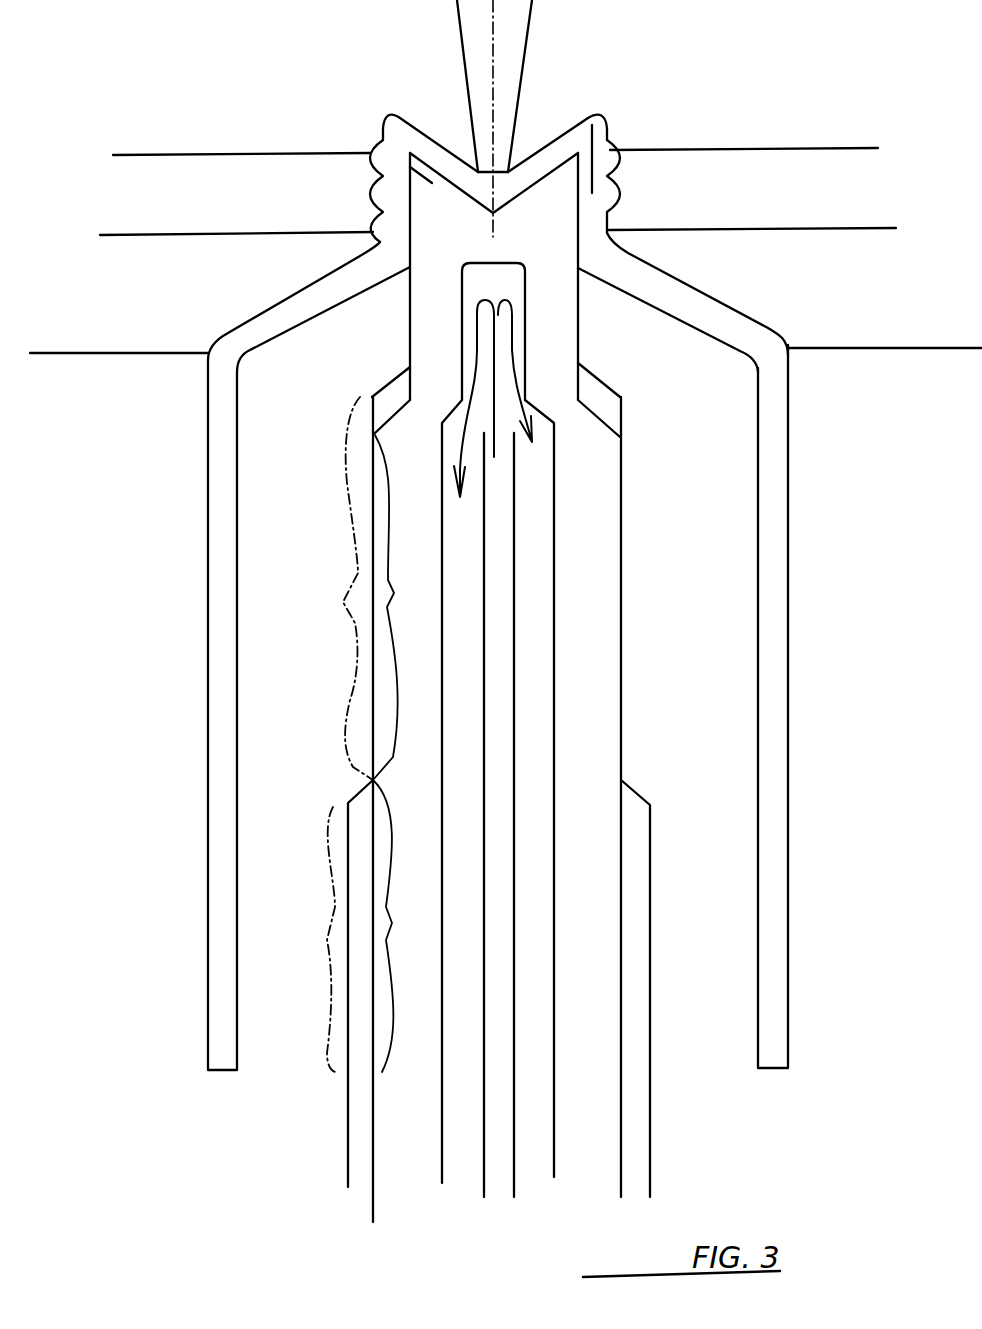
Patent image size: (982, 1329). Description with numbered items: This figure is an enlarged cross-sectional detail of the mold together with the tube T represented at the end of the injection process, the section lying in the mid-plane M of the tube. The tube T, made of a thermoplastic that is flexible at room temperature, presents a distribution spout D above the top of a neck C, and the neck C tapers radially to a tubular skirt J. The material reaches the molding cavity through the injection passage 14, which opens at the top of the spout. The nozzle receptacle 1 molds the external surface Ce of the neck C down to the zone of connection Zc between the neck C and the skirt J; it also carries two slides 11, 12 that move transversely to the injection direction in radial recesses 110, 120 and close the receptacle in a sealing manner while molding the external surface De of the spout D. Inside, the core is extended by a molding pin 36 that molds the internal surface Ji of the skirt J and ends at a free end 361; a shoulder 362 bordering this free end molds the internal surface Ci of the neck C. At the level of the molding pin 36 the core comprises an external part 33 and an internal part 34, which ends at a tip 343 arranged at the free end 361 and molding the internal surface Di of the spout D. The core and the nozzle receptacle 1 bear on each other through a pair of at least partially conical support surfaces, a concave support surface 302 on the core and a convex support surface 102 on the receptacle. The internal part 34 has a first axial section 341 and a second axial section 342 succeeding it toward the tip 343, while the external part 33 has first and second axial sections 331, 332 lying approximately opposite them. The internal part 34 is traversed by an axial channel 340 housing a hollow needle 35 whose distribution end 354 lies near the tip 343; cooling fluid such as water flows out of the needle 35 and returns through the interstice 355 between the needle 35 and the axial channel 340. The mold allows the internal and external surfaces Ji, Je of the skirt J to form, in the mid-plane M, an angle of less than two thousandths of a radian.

The injection passage 14 is at (487, 140).
The convex support surface of the nozzle receptacle 102 is at (565, 134).
The free end of the molding pin 361 is at (383, 128).
The tip of the internal part 343 is at (501, 181).
The distribution spout D is at (605, 131).
The external surface of the spout De is at (615, 188).
The internal surface of the spout Di is at (578, 212).
The concave support surface of the core 302 is at (517, 197).
The radial recess of the nozzle receptacle 110 is at (290, 155).
The radial recess of the nozzle receptacle 120 is at (723, 148).
The slide 11 is at (236, 194).
The slide 12 is at (752, 189).
The nozzle receptacle 1 is at (506, 190).
The neck C is at (267, 318).
The external surface of the neck Ce is at (293, 294).
The internal surface of the neck Ci is at (292, 328).
The shoulder 362 is at (365, 276).
The zone of connection Zc is at (205, 352).
The tubular skirt J is at (225, 683).
The external surface of the skirt Je is at (208, 602).
The internal surface of the skirt Ji is at (237, 590).
The tube T is at (175, 422).
The internal part of the core 34 is at (600, 730).
The external part of the core 33 is at (645, 786).
The molding pin 36 is at (708, 711).
The interstice 355 is at (533, 570).
The hollow needle 35 is at (513, 615).
The distribution end of the needle 354 is at (513, 440).
The second axial section of the external part 332 is at (335, 588).
The second axial section of the internal part 342 is at (409, 607).
The first axial section of the internal part 341 is at (409, 926).
The first axial section of the external part 331 is at (309, 939).
The axial channel 340 is at (533, 838).
The mid-plane of the tube M is at (121, 1131).